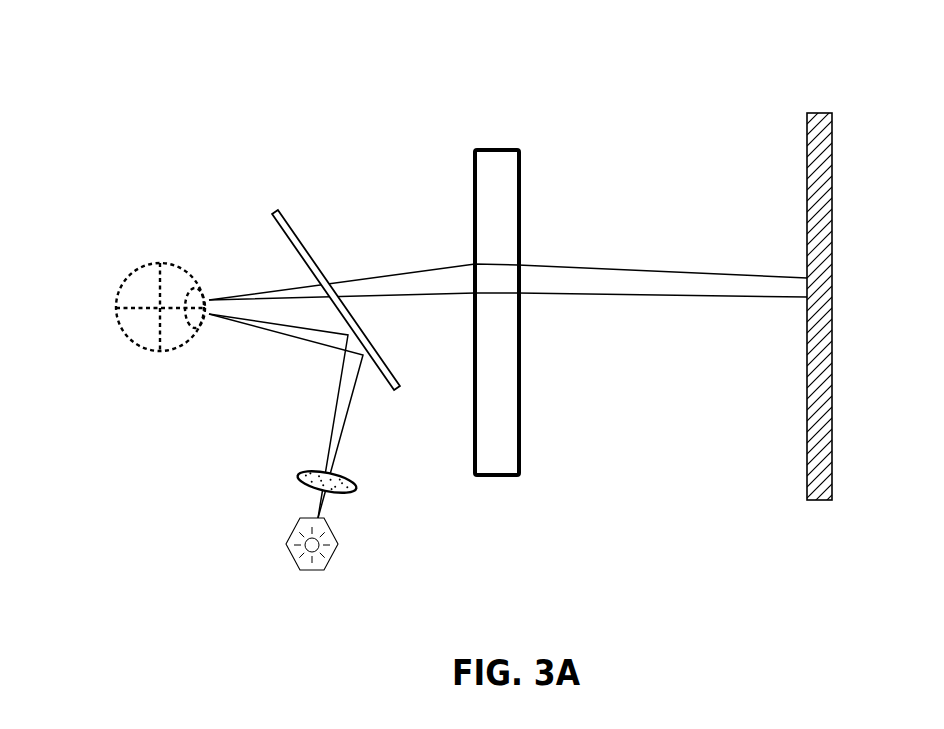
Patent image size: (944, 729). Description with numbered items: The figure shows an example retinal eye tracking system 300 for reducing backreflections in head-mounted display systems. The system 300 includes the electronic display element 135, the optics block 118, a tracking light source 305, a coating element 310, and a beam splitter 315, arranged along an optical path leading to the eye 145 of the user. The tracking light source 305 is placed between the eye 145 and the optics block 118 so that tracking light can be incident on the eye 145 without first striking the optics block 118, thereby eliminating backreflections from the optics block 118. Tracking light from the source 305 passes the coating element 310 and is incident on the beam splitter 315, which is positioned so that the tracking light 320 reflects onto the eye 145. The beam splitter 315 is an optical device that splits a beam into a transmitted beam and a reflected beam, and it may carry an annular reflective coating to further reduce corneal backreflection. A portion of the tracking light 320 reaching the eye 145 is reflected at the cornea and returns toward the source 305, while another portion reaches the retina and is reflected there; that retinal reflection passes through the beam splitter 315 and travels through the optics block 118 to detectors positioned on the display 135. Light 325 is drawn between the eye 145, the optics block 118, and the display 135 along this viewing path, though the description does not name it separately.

The retinal eye tracking system 300 is at (68, 97).
The eye 145 is at (113, 270).
The light from display to eye 325 is at (393, 270).
The tracking light 320 is at (353, 400).
The beam splitter 315 is at (266, 203).
The coating element 310 is at (288, 468).
The tracking light source 305 is at (283, 568).
The optics block 118 is at (466, 138).
The electronic display element 135 is at (800, 108).